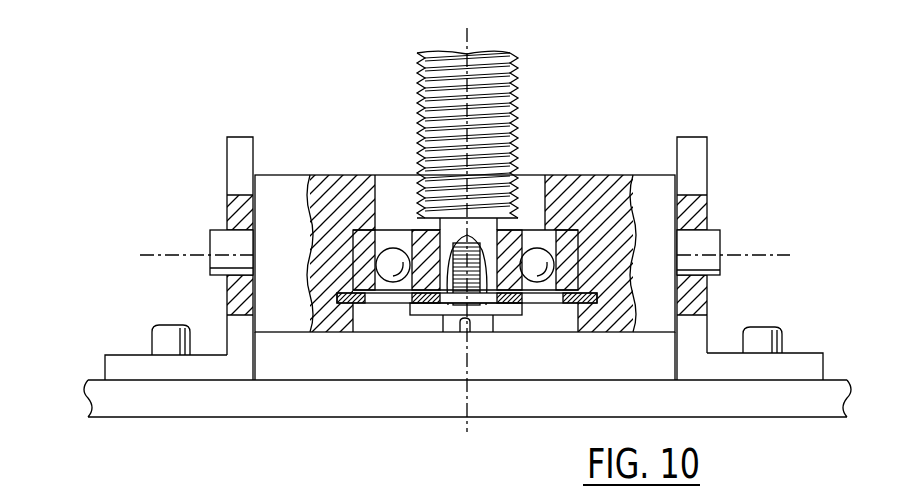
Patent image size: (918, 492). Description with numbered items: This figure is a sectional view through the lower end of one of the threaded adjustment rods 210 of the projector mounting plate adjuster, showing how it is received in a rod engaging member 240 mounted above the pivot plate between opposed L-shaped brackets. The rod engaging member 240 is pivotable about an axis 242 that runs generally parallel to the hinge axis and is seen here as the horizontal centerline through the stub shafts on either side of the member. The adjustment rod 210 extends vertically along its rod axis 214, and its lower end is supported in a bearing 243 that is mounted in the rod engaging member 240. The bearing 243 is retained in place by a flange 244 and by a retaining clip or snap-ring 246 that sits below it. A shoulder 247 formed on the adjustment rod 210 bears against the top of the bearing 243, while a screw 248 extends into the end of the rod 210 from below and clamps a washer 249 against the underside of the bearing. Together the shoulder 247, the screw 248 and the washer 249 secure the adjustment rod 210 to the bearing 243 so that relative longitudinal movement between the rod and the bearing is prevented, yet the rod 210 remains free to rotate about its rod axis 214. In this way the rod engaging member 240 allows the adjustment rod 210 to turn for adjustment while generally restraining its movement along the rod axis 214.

The threaded adjustment rod 210 is at (512, 95).
The rod axis 214 is at (467, 32).
The rod engaging member 240 is at (280, 175).
The axis 242 is at (160, 255).
The bearing 243 is at (384, 216).
The flange 244 is at (553, 228).
The retaining clip or snap-ring 246 is at (571, 304).
The shoulder 247 is at (419, 223).
The screw 248 is at (450, 330).
The washer 249 is at (515, 320).